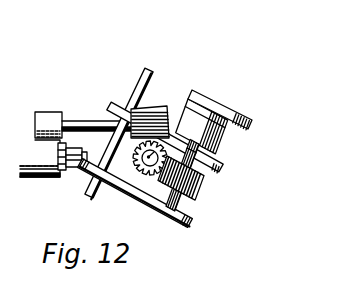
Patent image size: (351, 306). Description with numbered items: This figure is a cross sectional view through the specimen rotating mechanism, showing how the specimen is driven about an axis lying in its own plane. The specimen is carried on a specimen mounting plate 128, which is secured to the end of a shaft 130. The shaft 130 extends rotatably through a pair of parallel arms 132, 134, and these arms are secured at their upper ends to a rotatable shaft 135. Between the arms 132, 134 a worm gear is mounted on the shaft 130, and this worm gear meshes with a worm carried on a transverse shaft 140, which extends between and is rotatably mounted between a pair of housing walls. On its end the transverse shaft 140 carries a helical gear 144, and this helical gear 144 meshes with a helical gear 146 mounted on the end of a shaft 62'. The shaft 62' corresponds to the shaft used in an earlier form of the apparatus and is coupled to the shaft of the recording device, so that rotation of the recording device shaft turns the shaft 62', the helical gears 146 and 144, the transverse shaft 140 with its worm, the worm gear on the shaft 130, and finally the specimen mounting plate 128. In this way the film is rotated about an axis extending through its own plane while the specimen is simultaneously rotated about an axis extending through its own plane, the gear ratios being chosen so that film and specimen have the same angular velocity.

The shaft 62' is at (75, 122).
The specimen mounting plate 128 is at (254, 120).
The shaft 130 is at (205, 183).
The arm 132 is at (225, 166).
The arm 134 is at (193, 224).
The rotatable shaft 135 is at (143, 68).
The transverse shaft 140 is at (133, 177).
The helical gear 144 is at (182, 104).
The helical gear 146 is at (166, 106).